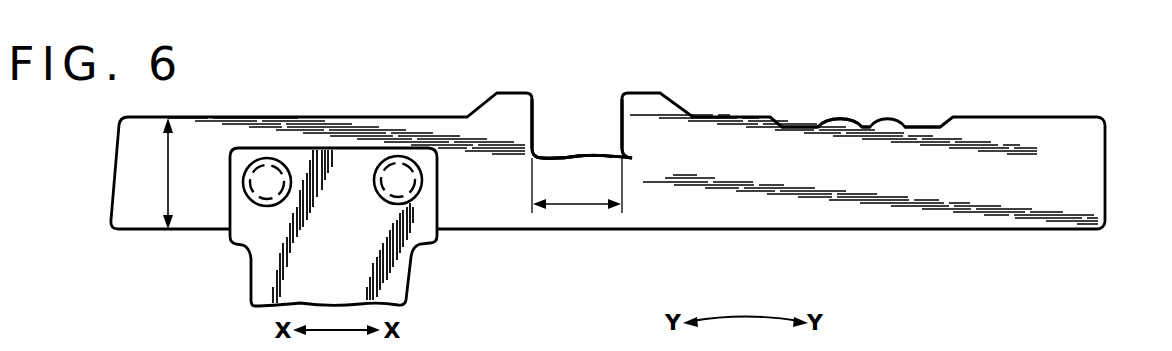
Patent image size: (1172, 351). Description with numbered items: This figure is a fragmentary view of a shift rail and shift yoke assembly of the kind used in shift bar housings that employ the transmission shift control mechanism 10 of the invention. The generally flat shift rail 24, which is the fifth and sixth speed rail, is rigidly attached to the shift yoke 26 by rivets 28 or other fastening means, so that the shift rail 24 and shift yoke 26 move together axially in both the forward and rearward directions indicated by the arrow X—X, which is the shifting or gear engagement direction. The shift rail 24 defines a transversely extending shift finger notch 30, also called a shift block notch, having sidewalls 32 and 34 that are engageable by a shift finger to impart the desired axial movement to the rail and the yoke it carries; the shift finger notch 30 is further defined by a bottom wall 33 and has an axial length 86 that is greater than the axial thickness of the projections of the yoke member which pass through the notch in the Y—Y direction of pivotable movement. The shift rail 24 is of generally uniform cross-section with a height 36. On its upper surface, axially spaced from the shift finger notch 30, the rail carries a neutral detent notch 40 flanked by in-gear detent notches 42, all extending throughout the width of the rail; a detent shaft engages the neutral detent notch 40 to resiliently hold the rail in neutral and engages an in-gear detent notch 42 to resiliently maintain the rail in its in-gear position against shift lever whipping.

The transmission shift control mechanism 10 is at (972, 343).
The shift rail 24 is at (1087, 175).
The shift yoke 26 is at (270, 289).
The rivets 28 is at (398, 175).
The shift finger notch 30 is at (582, 101).
The sidewall 32 is at (615, 105).
The bottom wall 33 is at (578, 156).
The sidewall 34 is at (543, 92).
The height 36 is at (168, 183).
The neutral detent notch 40 is at (862, 125).
The in-gear detent notch 42 is at (810, 125).
The axial length 86 is at (585, 206).